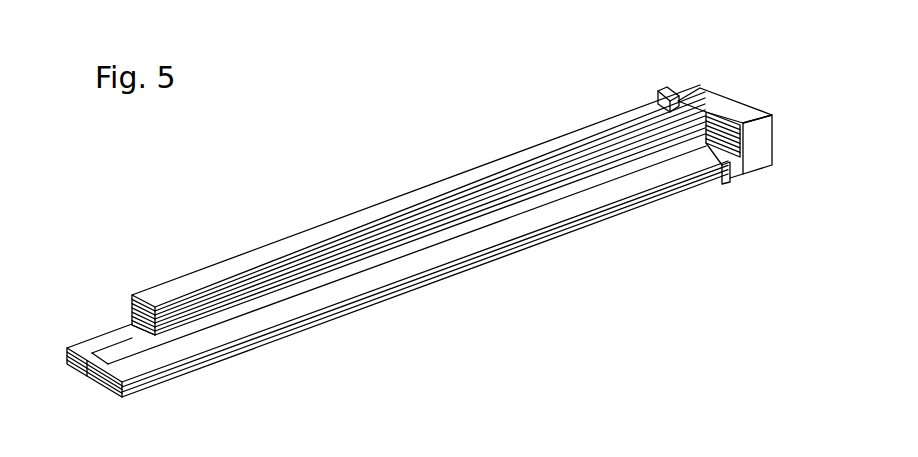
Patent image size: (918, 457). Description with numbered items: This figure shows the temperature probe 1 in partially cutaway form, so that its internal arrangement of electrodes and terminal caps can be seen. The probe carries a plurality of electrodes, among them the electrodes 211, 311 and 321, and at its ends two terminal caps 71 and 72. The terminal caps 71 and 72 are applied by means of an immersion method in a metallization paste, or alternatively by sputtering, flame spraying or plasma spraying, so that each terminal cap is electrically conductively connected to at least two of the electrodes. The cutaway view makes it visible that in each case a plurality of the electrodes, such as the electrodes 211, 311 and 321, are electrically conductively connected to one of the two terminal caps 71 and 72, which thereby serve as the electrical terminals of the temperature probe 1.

The temperature probe 1 is at (270, 140).
The electrode 211 is at (125, 343).
The electrode 311 is at (247, 320).
The terminal cap 71 is at (760, 137).
The terminal cap 72 is at (660, 92).
The electrode 321 is at (700, 100).